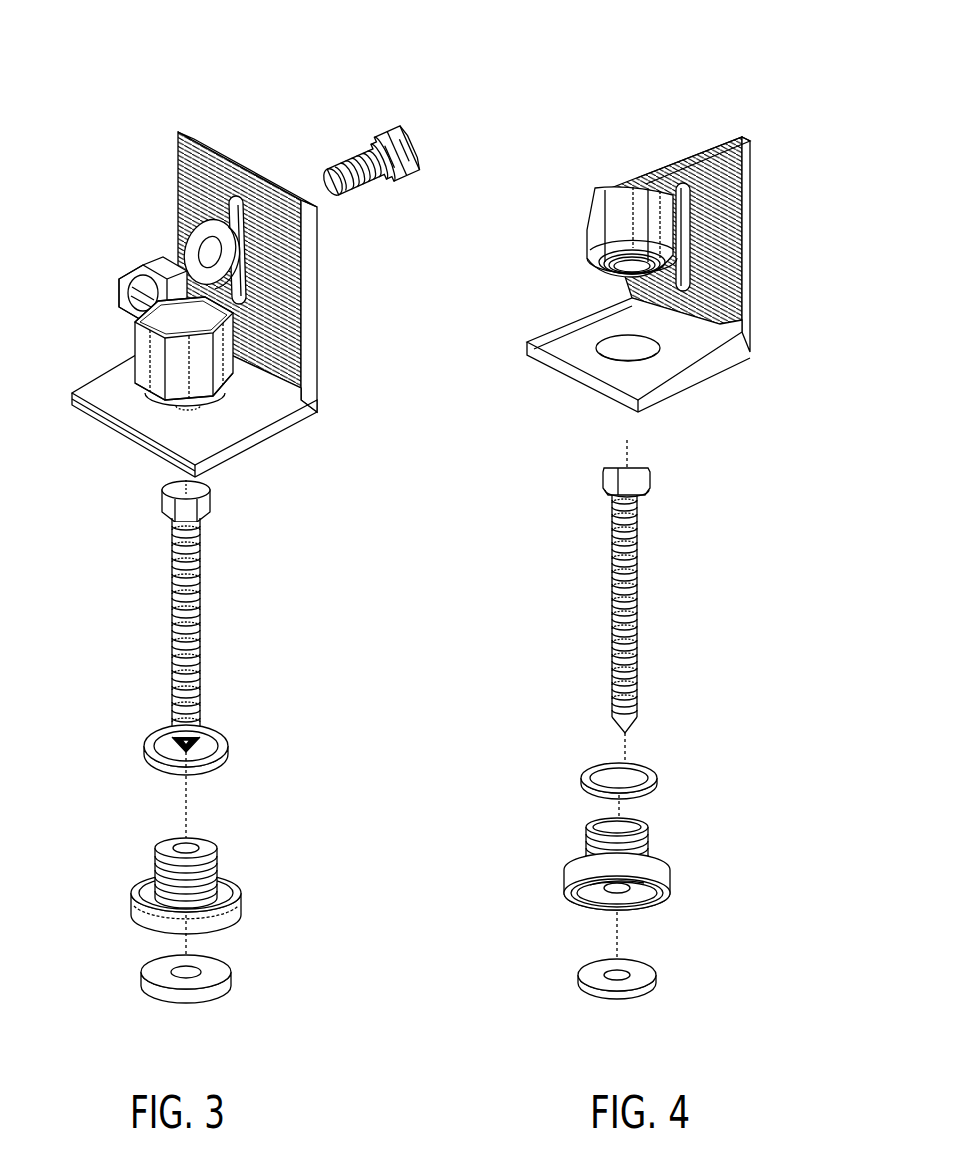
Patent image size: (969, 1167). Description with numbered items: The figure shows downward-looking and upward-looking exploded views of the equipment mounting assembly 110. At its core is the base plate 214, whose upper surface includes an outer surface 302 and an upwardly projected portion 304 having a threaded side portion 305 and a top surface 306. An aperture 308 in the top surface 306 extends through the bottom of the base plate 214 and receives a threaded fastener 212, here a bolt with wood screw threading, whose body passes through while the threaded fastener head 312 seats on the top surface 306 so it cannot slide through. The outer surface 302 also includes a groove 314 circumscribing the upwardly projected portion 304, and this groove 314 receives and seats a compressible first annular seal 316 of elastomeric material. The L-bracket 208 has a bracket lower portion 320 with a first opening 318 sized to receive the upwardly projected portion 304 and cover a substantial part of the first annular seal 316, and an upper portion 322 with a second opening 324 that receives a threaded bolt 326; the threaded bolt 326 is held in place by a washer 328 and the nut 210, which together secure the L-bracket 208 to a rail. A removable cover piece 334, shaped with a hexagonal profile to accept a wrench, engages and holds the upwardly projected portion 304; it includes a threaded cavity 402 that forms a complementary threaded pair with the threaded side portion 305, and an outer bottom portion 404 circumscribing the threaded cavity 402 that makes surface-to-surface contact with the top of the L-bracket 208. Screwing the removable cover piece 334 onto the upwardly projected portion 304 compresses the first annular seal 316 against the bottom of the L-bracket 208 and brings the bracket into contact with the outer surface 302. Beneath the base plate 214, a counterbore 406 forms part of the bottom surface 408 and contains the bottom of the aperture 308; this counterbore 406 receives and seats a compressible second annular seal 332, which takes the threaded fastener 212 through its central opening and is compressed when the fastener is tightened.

In FIG. 3, the equipment mounting assembly 110 is at (225, 80).
In FIG. 4, the equipment mounting assembly 110 is at (657, 73).
In FIG. 3, the L-bracket 208 is at (318, 352).
In FIG. 4, the L-bracket 208 is at (750, 246).
In FIG. 3, the nut 210 is at (124, 290).
In FIG. 3, the threaded fastener 212 is at (200, 600).
In FIG. 4, the threaded fastener 212 is at (640, 566).
In FIG. 3, the base plate 214 is at (133, 901).
In FIG. 4, the base plate 214 is at (670, 877).
In FIG. 3, the outer surface 302 is at (241, 897).
In FIG. 3, the upwardly projected portion 304 is at (150, 870).
In FIG. 4, the upwardly projected portion 304 is at (650, 846).
In FIG. 3, the threaded side portion 305 is at (140, 913).
In FIG. 4, the threaded side portion 305 is at (600, 831).
In FIG. 3, the top surface 306 is at (166, 843).
In FIG. 4, the top surface 306 is at (643, 822).
In FIG. 3, the aperture 308 is at (193, 846).
In FIG. 4, the aperture 308 is at (640, 894).
In FIG. 3, the threaded fastener head 312 is at (162, 501).
In FIG. 4, the threaded fastener head 312 is at (603, 486).
In FIG. 3, the groove 314 is at (223, 882).
In FIG. 3, the first annular seal 316 is at (230, 752).
In FIG. 4, the first annular seal 316 is at (598, 766).
In FIG. 3, the first opening 318 is at (200, 414).
In FIG. 4, the first opening 318 is at (652, 362).
In FIG. 3, the bracket lower portion 320 is at (300, 424).
In FIG. 4, the bracket lower portion 320 is at (735, 341).
In FIG. 3, the upper portion 322 is at (306, 252).
In FIG. 4, the upper portion 322 is at (672, 166).
In FIG. 3, the second opening 324 is at (241, 198).
In FIG. 4, the second opening 324 is at (718, 188).
In FIG. 3, the threaded bolt 326 is at (412, 166).
In FIG. 3, the washer 328 is at (185, 226).
In FIG. 3, the second annular seal 332 is at (232, 986).
In FIG. 4, the second annular seal 332 is at (656, 976).
In FIG. 3, the removable cover piece 334 is at (130, 362).
In FIG. 4, the removable cover piece 334 is at (612, 188).
In FIG. 4, the threaded cavity 402 is at (616, 282).
In FIG. 4, the outer bottom portion 404 is at (590, 271).
In FIG. 4, the counterbore 406 is at (590, 901).
In FIG. 4, the bottom surface 408 is at (565, 896).